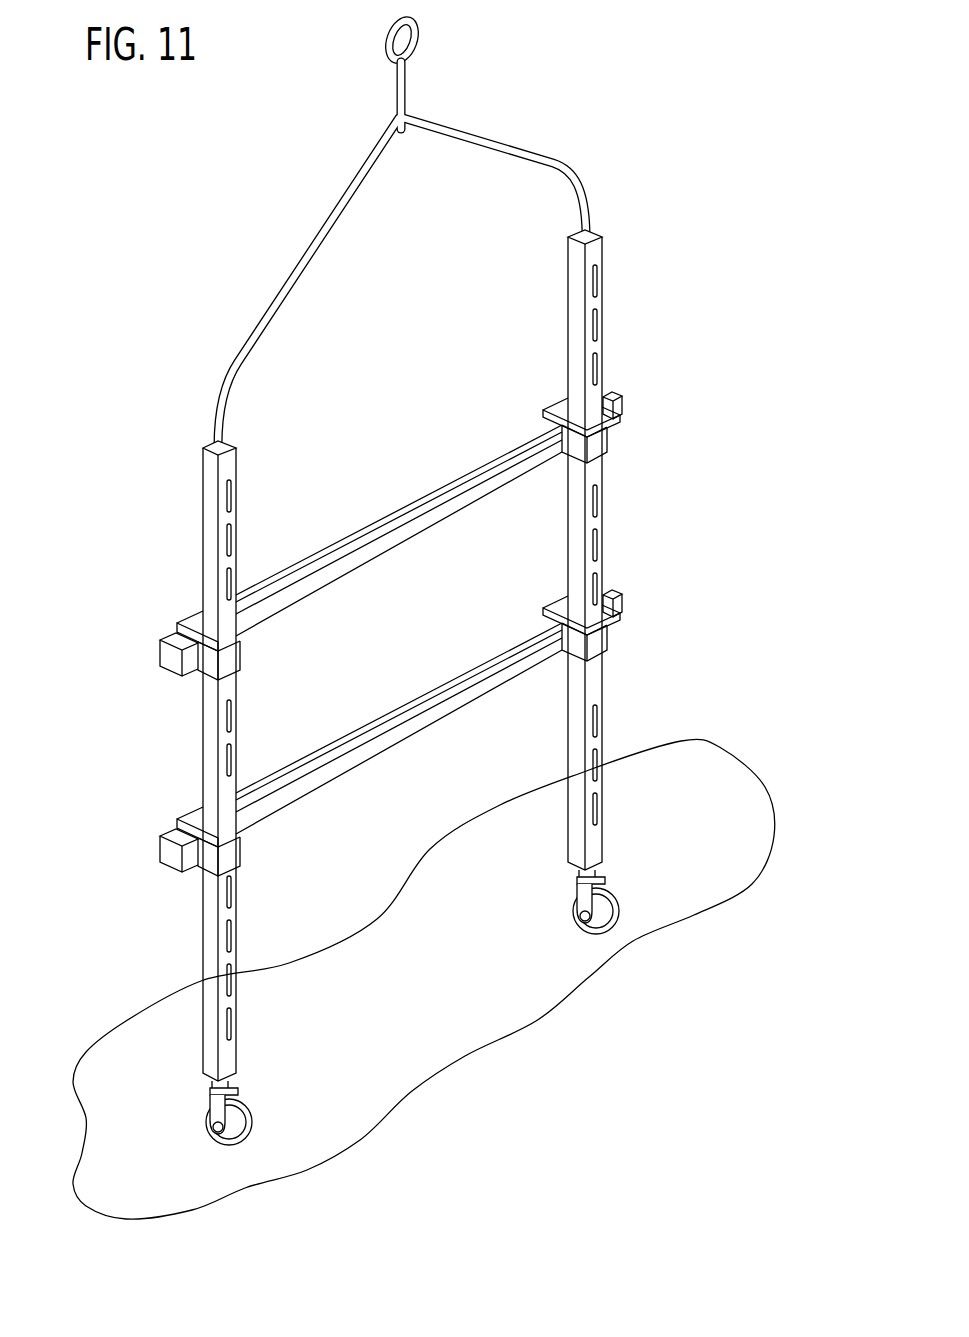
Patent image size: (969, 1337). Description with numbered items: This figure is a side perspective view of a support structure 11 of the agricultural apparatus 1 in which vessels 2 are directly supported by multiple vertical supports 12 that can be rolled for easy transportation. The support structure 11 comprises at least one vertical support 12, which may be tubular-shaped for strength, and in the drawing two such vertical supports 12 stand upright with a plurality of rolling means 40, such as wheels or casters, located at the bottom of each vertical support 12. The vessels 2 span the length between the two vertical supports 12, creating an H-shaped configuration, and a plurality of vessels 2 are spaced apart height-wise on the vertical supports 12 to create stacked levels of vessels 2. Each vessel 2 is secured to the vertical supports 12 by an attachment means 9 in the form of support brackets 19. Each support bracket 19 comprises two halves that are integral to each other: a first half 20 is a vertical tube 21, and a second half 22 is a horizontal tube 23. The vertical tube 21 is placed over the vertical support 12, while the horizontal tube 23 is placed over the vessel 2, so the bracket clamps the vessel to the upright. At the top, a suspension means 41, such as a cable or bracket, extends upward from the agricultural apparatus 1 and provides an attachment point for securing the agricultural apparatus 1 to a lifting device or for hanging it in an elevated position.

The agricultural apparatus 1 is at (708, 349).
The vessel 2 is at (394, 508).
The attachment means 9 is at (414, 634).
The support structure 11 is at (269, 897).
The vertical support 12 is at (237, 465).
The support bracket 19 is at (414, 634).
The first half 20 is at (414, 634).
The vertical tube 21 is at (414, 634).
The second half 22 is at (414, 634).
The horizontal tube 23 is at (197, 630).
The rolling means 40 is at (243, 1108).
The suspension means 41 is at (495, 137).